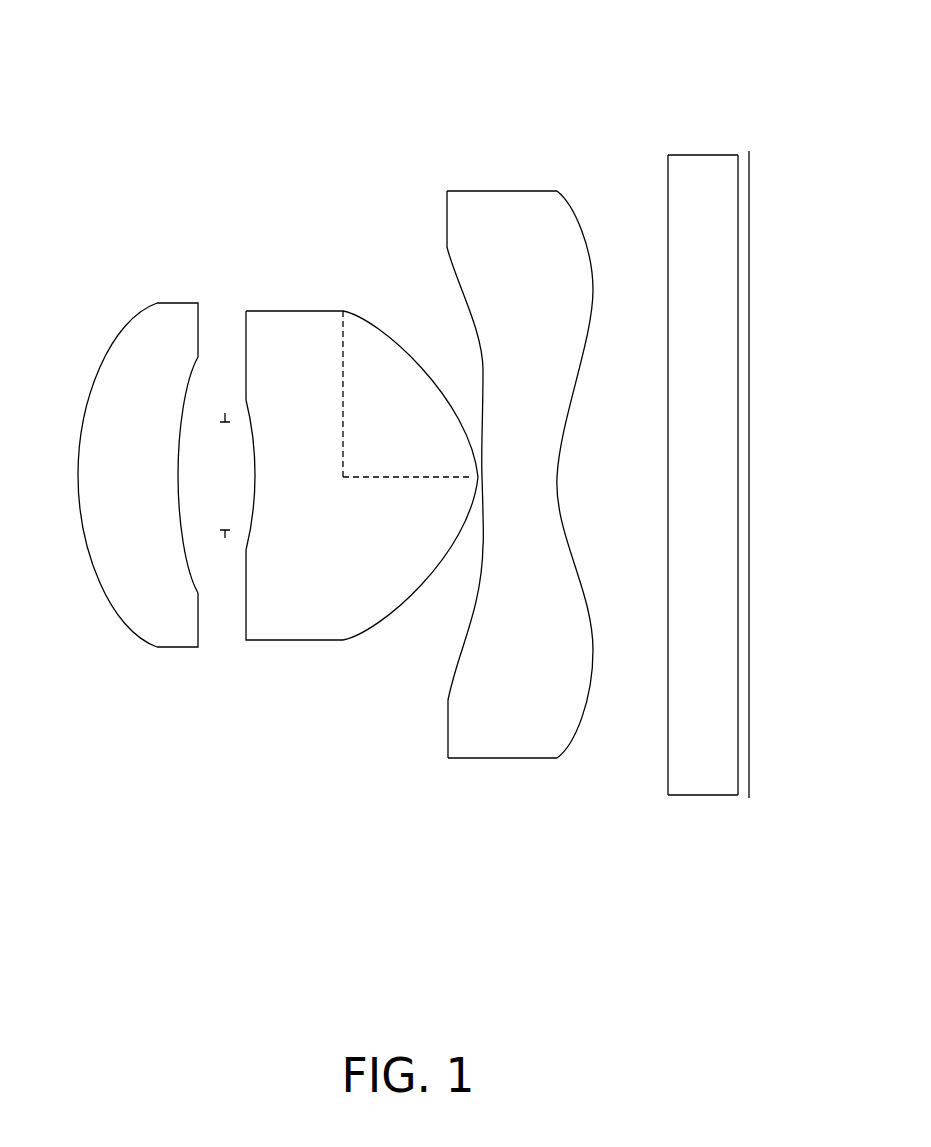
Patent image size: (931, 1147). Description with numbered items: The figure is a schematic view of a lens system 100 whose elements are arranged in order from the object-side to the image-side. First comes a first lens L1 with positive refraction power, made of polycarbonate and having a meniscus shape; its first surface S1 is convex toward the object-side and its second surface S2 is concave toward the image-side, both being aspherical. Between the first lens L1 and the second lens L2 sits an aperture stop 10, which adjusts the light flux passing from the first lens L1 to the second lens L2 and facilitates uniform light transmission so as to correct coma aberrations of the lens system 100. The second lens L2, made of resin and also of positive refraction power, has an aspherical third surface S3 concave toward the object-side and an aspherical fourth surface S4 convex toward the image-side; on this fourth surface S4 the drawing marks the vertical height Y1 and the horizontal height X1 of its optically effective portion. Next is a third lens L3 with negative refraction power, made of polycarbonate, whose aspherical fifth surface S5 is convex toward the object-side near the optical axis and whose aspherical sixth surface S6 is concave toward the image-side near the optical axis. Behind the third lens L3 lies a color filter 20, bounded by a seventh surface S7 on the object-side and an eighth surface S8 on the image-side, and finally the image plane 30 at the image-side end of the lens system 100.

The lens system 100 is at (424, 430).
The first lens L1 is at (134, 462).
The second lens L2 is at (338, 478).
The third lens L3 is at (513, 438).
The aperture stop 10 is at (225, 417).
The color filter 20 is at (699, 468).
The image plane 30 is at (750, 173).
The first surface S1 is at (98, 587).
The second surface S2 is at (197, 367).
The third surface S3 is at (250, 533).
The fourth surface S4 is at (373, 330).
The fifth surface S5 is at (480, 487).
The sixth surface S6 is at (557, 478).
The seventh surface S7 is at (668, 741).
The eighth surface S8 is at (738, 748).
The horizontal height of the optically effective portion of the fourth surface X1 is at (407, 494).
The vertical height of the optically effective portion of the fourth surface Y1 is at (325, 394).